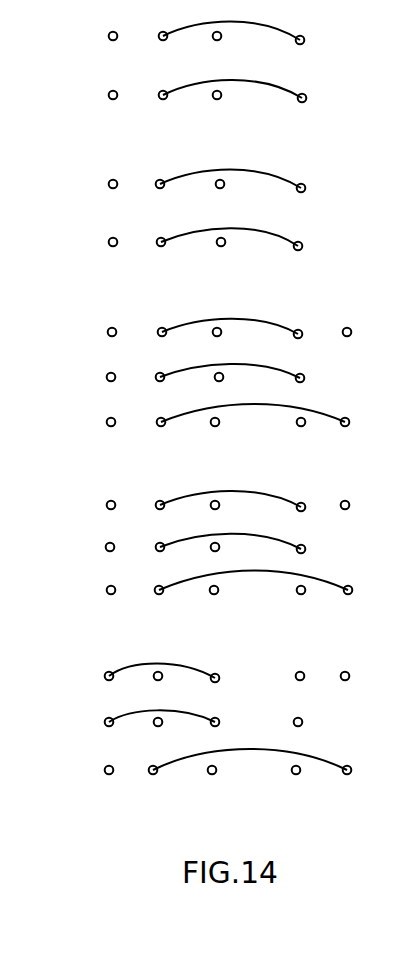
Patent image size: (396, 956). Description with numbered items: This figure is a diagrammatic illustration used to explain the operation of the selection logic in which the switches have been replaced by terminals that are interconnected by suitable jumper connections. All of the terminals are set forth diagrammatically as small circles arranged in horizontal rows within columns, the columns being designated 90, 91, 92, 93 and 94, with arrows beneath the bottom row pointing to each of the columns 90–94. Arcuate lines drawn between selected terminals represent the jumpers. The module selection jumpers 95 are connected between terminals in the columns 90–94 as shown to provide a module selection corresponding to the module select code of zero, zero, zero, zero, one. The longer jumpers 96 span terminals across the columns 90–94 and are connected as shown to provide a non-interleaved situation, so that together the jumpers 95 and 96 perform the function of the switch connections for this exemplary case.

The terminal column 90 is at (106, 784).
The terminal column 91 is at (152, 784).
The terminal column 92 is at (210, 784).
The terminal column 93 is at (294, 784).
The terminal column 94 is at (345, 784).
The module selection jumpers 95 is at (272, 30).
The jumpers 96 is at (318, 409).